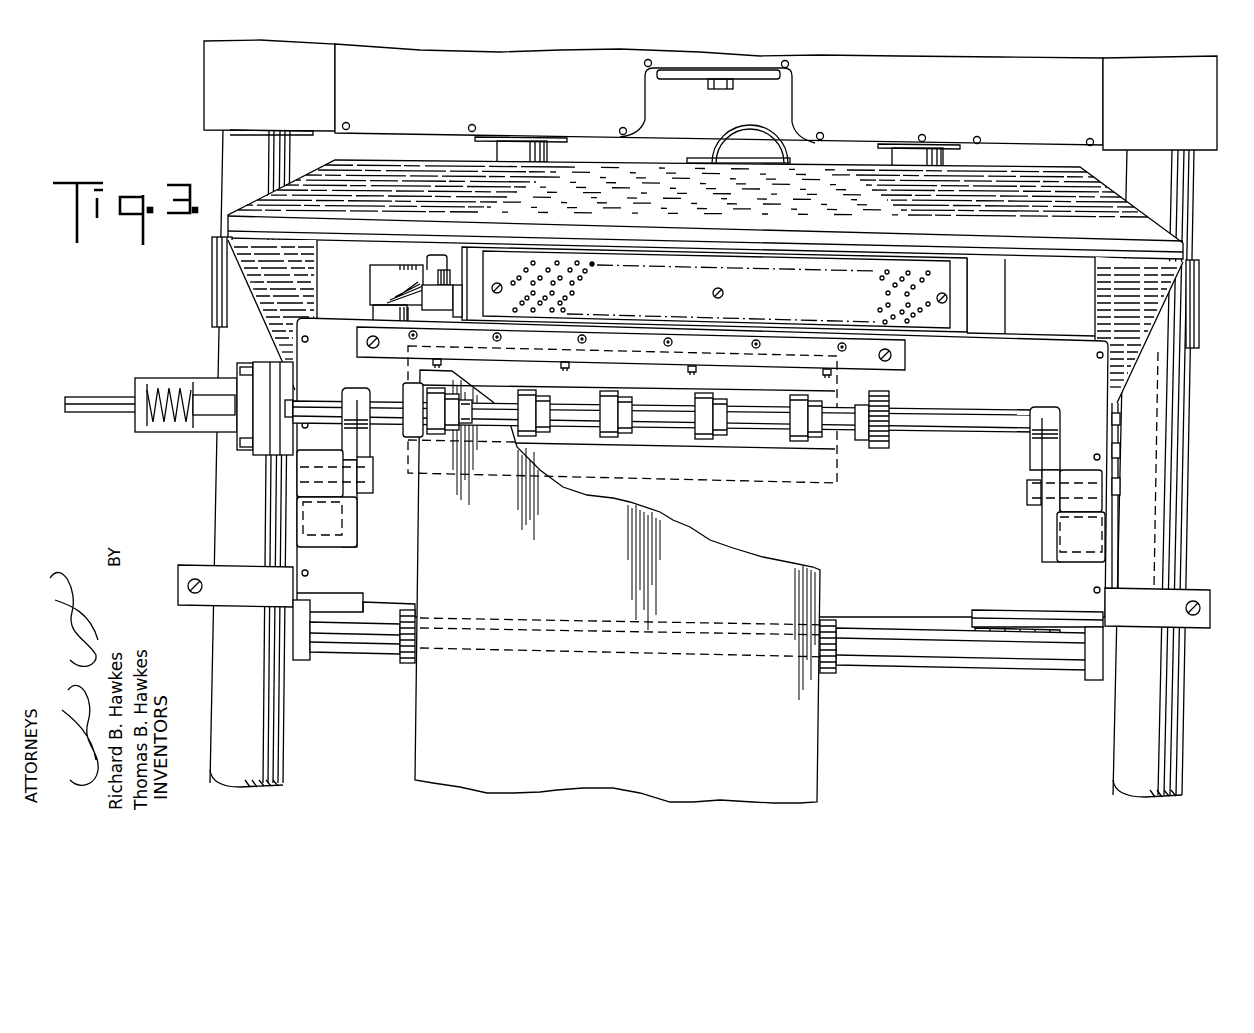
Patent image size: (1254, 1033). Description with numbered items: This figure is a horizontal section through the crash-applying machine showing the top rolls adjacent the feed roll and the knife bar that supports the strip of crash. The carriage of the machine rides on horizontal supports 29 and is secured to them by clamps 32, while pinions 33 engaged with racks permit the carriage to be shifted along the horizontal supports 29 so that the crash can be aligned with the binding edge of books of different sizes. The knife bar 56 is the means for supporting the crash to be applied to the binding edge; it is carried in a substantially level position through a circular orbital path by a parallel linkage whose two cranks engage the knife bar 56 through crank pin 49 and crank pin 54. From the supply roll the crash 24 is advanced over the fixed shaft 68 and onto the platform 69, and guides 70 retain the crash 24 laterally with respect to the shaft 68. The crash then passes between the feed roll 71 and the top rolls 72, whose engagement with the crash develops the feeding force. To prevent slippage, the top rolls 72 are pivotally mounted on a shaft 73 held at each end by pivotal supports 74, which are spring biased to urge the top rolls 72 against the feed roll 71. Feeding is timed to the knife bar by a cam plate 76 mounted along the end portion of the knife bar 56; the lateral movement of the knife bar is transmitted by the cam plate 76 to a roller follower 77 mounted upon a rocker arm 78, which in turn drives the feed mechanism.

The crash 24 is at (614, 720).
The horizontal supports 29 is at (223, 661).
The clamps 32 is at (186, 566).
The pinions 33 is at (1194, 293).
The crank pin 49 is at (520, 148).
The crank pin 54 is at (917, 156).
The knife bar 56 is at (463, 247).
The fixed shaft 68 is at (928, 655).
The platform 69 is at (950, 540).
The guides 70 is at (408, 666).
The feed roll 71 is at (838, 474).
The top rolls 72 is at (807, 442).
The shaft 73 is at (956, 414).
The pivotal supports 74 is at (358, 440).
The cam plate 76 is at (458, 317).
The roller follower 77 is at (438, 310).
The rocker arm 78 is at (370, 276).